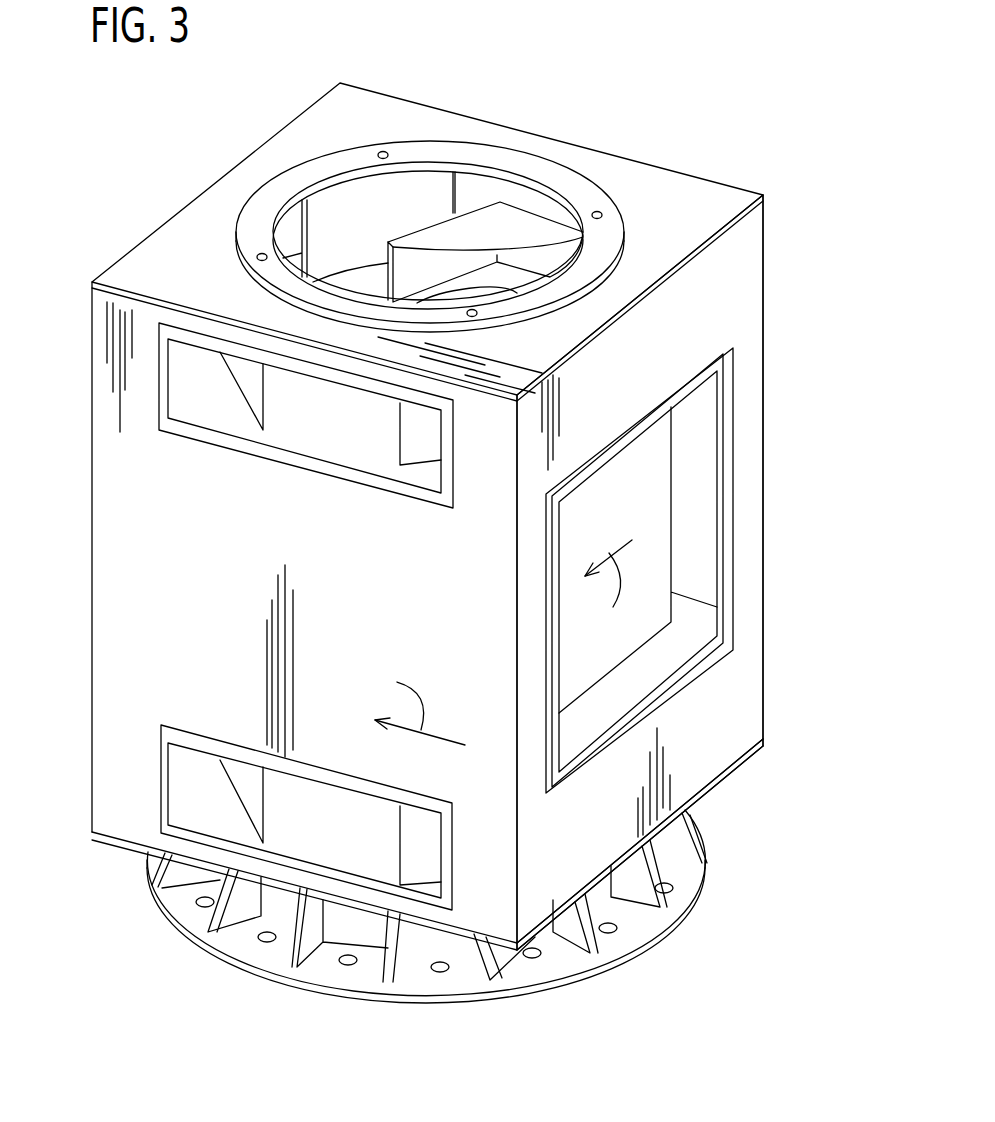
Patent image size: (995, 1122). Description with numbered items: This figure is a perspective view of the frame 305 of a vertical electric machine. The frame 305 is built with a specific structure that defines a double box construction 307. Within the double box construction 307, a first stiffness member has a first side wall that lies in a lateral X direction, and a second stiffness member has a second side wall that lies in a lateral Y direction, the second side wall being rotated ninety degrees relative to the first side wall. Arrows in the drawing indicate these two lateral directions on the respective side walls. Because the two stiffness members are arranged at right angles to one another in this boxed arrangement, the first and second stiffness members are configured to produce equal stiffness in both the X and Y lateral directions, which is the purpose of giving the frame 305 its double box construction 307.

The frame 305 is at (637, 161).
The double box construction 307 is at (641, 570).